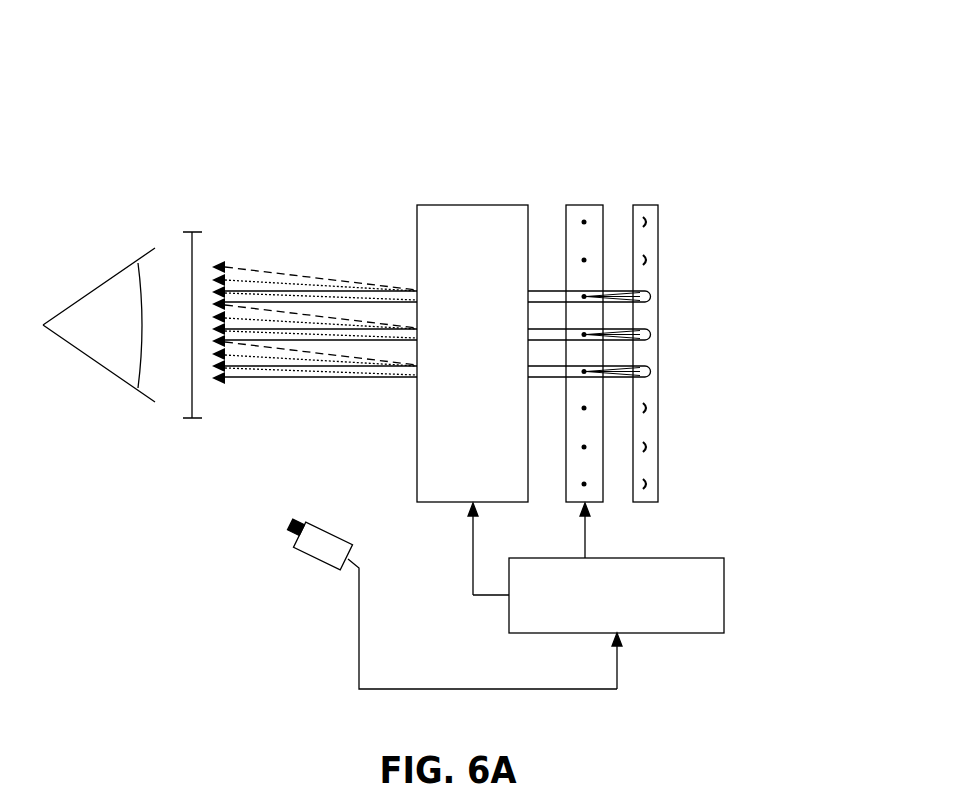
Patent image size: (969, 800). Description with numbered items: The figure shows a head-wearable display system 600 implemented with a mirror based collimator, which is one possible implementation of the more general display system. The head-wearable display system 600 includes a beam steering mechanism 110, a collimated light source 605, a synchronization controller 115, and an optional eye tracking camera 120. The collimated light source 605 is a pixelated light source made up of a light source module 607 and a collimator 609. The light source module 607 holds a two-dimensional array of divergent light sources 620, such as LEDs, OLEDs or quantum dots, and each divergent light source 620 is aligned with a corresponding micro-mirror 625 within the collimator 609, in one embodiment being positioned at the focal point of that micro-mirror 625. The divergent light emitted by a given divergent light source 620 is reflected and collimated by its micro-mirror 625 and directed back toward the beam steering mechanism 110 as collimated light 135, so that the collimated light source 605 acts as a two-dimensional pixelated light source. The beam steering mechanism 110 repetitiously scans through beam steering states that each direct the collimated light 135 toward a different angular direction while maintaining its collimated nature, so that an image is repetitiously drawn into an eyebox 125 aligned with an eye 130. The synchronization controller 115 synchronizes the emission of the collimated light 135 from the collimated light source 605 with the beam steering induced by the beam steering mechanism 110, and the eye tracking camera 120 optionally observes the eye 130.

The head-wearable display system 600 is at (806, 111).
The eyebox 125 is at (192, 232).
The eye 130 is at (87, 334).
The collimated light 135 is at (556, 297).
The beam steering mechanism 110 is at (458, 476).
The collimated light source 605 is at (658, 130).
The light source module 607 is at (584, 347).
The collimator 609 is at (732, 353).
The divergent light source 620 is at (586, 486).
The micro-mirror 625 is at (648, 483).
The synchronization controller 115 is at (700, 619).
The eye tracking camera 120 is at (315, 558).